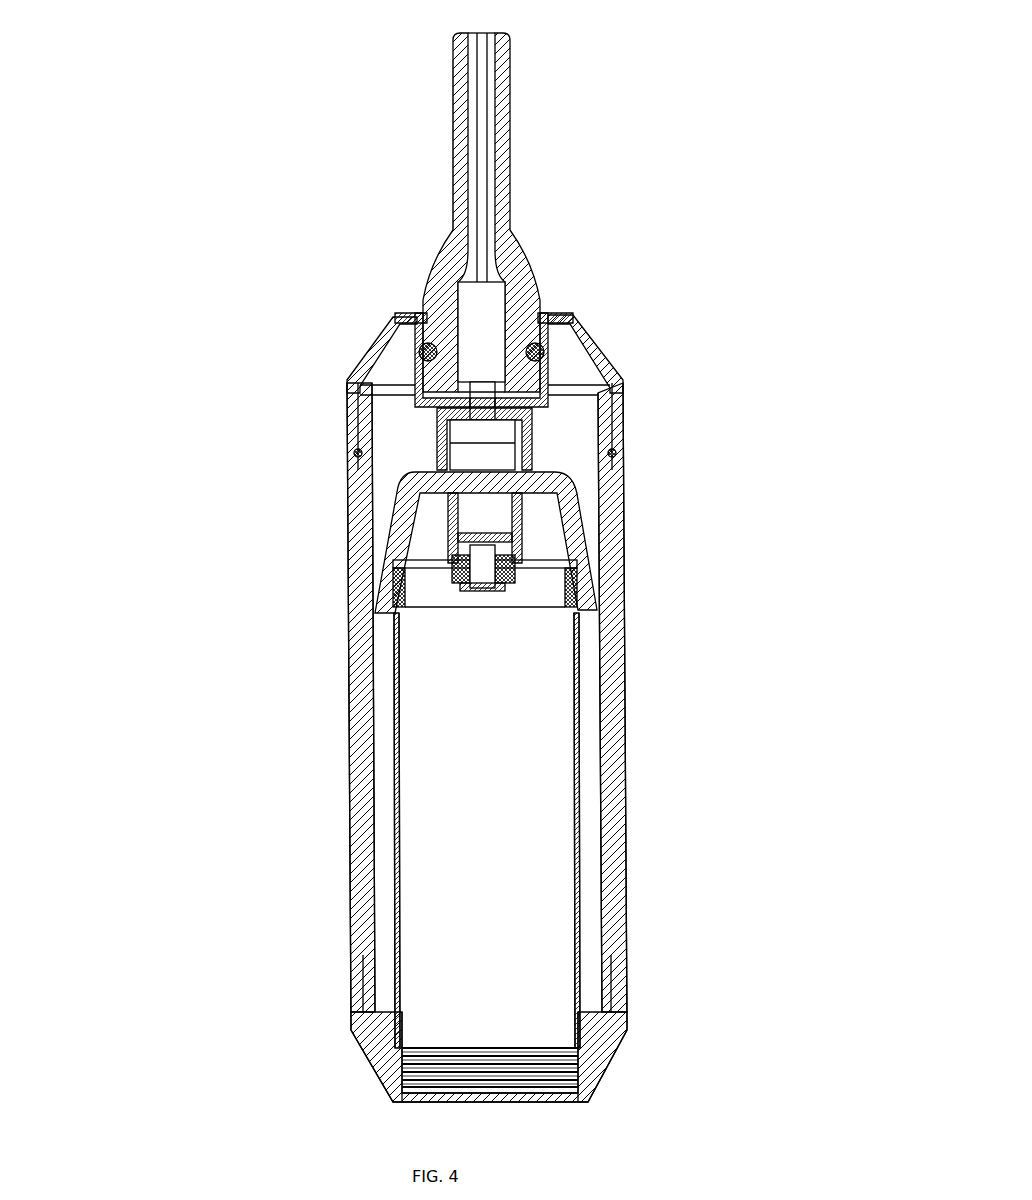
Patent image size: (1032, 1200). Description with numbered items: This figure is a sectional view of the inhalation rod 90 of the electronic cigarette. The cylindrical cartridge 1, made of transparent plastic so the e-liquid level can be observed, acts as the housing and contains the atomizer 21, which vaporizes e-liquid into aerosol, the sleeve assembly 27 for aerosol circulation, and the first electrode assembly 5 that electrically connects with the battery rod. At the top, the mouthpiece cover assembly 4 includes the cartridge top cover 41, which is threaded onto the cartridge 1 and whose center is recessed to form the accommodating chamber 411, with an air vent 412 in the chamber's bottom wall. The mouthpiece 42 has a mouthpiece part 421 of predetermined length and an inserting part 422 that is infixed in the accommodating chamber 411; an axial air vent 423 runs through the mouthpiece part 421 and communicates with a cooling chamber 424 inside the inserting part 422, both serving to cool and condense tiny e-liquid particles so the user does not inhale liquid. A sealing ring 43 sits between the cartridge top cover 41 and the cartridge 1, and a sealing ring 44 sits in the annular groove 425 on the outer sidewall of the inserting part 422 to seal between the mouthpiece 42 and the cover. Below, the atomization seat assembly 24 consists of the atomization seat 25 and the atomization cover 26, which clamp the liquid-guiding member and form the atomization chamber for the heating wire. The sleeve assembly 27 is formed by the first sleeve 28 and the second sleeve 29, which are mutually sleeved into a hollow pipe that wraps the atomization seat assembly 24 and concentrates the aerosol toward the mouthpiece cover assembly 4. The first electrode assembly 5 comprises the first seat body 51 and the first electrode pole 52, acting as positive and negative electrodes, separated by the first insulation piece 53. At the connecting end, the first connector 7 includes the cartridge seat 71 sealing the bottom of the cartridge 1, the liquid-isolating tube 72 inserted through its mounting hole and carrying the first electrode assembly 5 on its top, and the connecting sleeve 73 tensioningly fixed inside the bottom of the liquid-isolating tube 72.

The inhalation rod 90 is at (364, 67).
The cartridge 1 is at (348, 798).
The mouthpiece cover assembly 4 is at (460, 251).
The cartridge top cover 41 is at (414, 348).
The mouthpiece 42 is at (471, 226).
The sealing ring 43 is at (487, 392).
The sealing ring 44 is at (430, 348).
The accommodating chamber 411 is at (553, 383).
The air vent 412 is at (535, 412).
The mouthpiece part 421 is at (500, 187).
The inserting part 422 is at (518, 342).
The air vent 423 is at (482, 230).
The cooling chamber 424 is at (482, 293).
The annular groove 425 is at (507, 385).
The atomizer 21 is at (493, 497).
The atomization seat assembly 24 is at (576, 542).
The atomization seat 25 is at (525, 507).
The atomization cover 26 is at (515, 422).
The sleeve assembly 27 is at (461, 500).
The first sleeve 28 is at (445, 522).
The second sleeve 29 is at (437, 440).
The first electrode assembly 5 is at (358, 633).
The first seat body 51 is at (452, 575).
The first electrode pole 52 is at (478, 598).
The first insulation piece 53 is at (465, 592).
The first connector 7 is at (424, 857).
The cartridge seat 71 is at (373, 1040).
The liquid-isolating tube 72 is at (396, 932).
The connecting sleeve 73 is at (400, 1063).